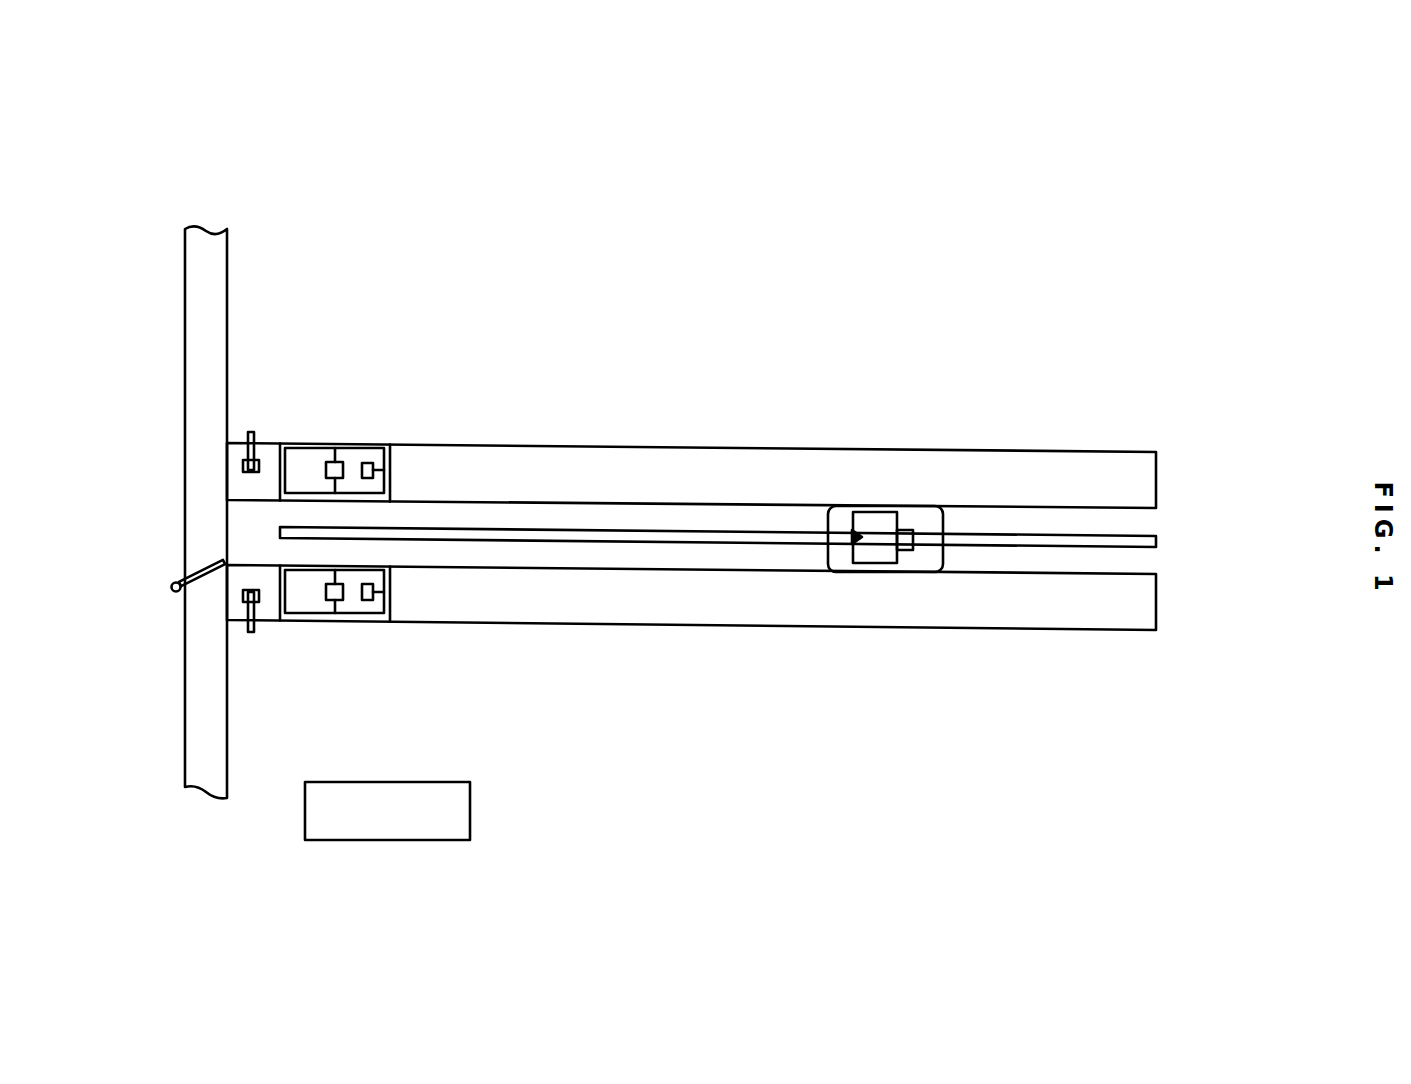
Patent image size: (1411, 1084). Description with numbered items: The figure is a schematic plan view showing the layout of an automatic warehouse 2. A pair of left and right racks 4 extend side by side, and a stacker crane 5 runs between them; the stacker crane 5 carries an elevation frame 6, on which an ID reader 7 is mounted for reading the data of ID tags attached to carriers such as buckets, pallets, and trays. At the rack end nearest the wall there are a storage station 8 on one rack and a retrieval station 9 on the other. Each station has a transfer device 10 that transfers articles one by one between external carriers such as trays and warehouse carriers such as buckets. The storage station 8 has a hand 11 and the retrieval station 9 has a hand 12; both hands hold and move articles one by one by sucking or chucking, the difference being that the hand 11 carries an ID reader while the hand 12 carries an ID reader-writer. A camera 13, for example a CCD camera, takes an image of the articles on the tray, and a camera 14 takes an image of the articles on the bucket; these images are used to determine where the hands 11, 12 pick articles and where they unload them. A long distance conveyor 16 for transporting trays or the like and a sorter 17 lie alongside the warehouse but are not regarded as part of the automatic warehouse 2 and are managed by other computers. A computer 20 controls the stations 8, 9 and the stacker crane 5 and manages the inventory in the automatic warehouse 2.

The automatic warehouse 2 is at (628, 512).
The racks 4 is at (1084, 466).
The stacker crane 5 is at (921, 512).
The elevation frame 6 is at (871, 520).
The ID reader 7 is at (852, 535).
The storage station 8 is at (334, 630).
The retrieval station 9 is at (333, 430).
The transfer device 10 is at (312, 447).
The hand 11 is at (347, 600).
The hand 12 is at (346, 462).
The camera 13 is at (268, 462).
The camera 14 is at (370, 462).
The long distance conveyor 16 is at (188, 675).
The sorter 17 is at (205, 572).
The computer 20 is at (470, 810).